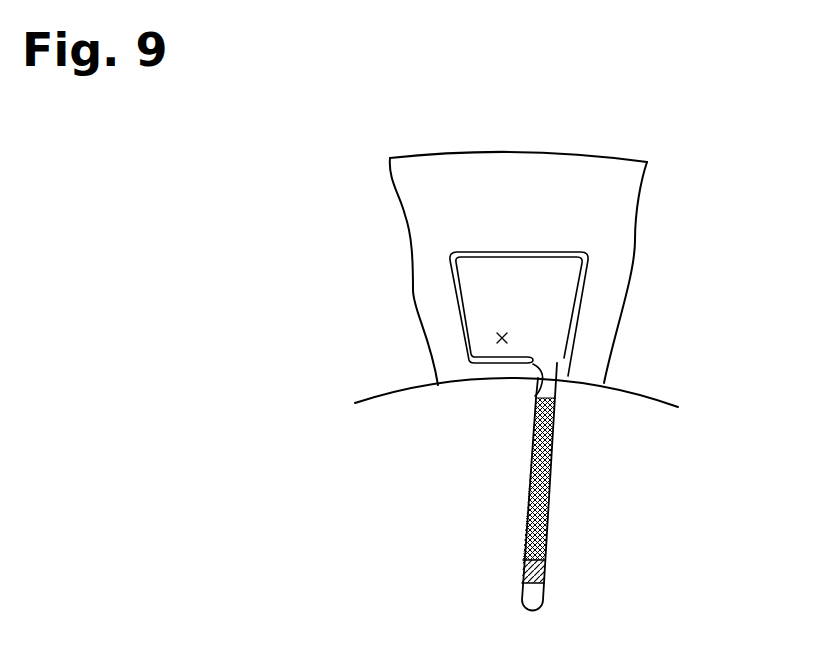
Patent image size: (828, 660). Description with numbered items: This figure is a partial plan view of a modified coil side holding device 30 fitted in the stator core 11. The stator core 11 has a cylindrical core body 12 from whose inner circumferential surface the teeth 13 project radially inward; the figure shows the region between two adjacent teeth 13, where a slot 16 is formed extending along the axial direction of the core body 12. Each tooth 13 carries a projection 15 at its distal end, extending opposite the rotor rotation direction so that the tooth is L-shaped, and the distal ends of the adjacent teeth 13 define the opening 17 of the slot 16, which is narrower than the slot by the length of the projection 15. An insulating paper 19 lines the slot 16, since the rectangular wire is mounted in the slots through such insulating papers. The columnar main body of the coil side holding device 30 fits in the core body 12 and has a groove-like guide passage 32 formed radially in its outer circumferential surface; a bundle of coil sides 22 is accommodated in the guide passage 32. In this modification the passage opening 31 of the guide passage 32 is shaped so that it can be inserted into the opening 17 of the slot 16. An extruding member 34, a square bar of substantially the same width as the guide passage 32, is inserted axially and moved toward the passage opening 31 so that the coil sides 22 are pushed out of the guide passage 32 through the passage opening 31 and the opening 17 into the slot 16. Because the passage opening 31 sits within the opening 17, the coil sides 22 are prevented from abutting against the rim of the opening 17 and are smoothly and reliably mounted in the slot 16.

The stator core 11 is at (618, 192).
The core body 12 is at (618, 240).
The tooth 13 is at (600, 292).
The projection 15 is at (493, 372).
The slot 16 is at (473, 343).
The opening 17 is at (562, 358).
The insulating paper 19 is at (461, 307).
The coil side 22 is at (553, 487).
The coil side holding device 30 is at (630, 407).
The passage opening 31 is at (535, 390).
The guide passage 32 is at (538, 594).
The extruding member 34 is at (545, 567).